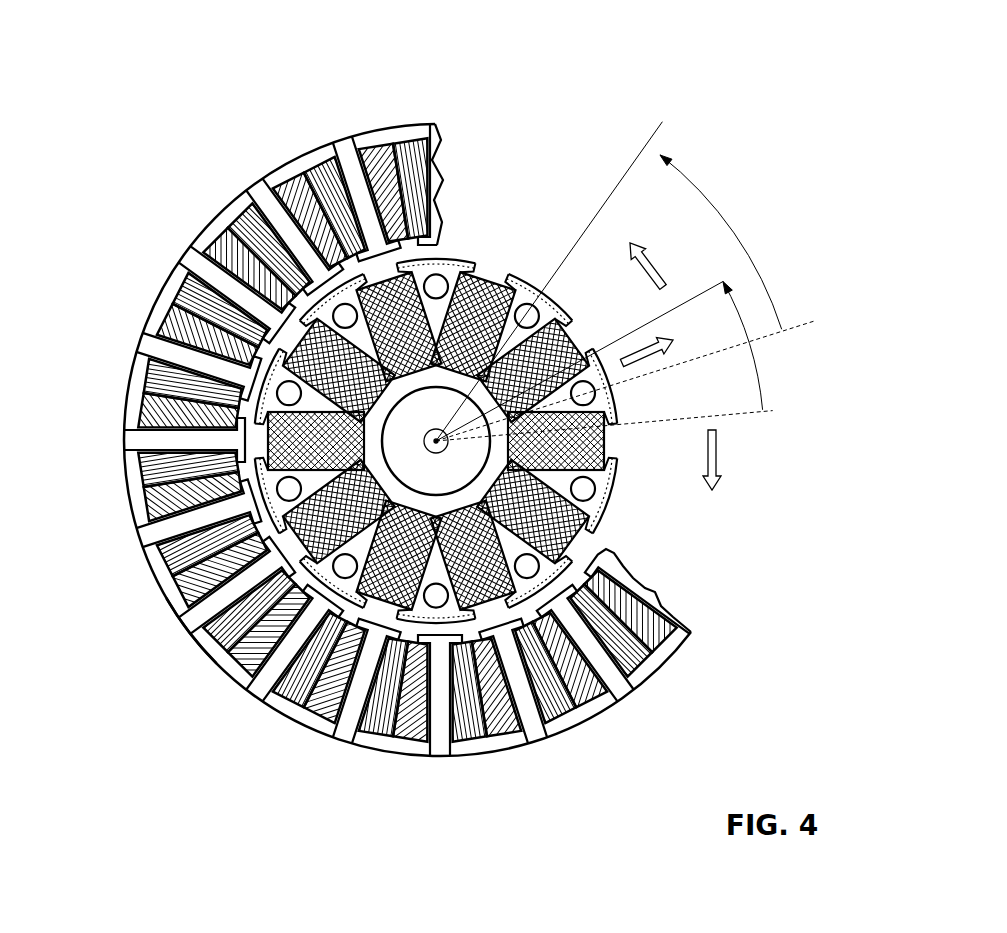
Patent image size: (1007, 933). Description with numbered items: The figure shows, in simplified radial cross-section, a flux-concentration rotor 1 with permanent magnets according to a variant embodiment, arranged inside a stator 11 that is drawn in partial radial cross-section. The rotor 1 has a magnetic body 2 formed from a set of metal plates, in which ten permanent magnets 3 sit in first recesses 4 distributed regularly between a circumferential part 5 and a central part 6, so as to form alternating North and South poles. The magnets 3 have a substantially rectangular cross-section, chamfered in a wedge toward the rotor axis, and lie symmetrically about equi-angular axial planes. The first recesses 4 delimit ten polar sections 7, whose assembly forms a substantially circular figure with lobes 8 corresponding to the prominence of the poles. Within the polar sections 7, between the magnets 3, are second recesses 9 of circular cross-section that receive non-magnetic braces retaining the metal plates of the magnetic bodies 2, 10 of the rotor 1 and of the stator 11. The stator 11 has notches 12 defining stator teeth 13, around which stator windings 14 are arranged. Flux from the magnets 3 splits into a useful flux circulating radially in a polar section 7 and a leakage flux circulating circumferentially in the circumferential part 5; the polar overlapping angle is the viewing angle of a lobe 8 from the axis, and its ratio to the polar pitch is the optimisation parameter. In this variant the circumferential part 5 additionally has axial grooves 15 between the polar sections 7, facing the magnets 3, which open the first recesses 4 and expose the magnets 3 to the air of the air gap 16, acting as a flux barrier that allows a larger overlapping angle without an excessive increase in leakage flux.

The rotor 1 is at (586, 116).
The magnetic body 2 is at (377, 250).
The permanent magnets 3 is at (290, 217).
The first recesses 4 is at (185, 255).
The circumferential part 5 is at (450, 268).
The central part 6 is at (396, 412).
The polar sections 7 is at (247, 392).
The lobes 8 is at (534, 282).
The second recesses 9 is at (283, 493).
The magnetic body 10 is at (616, 700).
The stator 11 is at (162, 654).
The notches 12 is at (273, 693).
The stator teeth 13 is at (363, 690).
The stator windings 14 is at (493, 717).
The axial grooves 15 is at (578, 337).
The air gap 16 is at (585, 565).